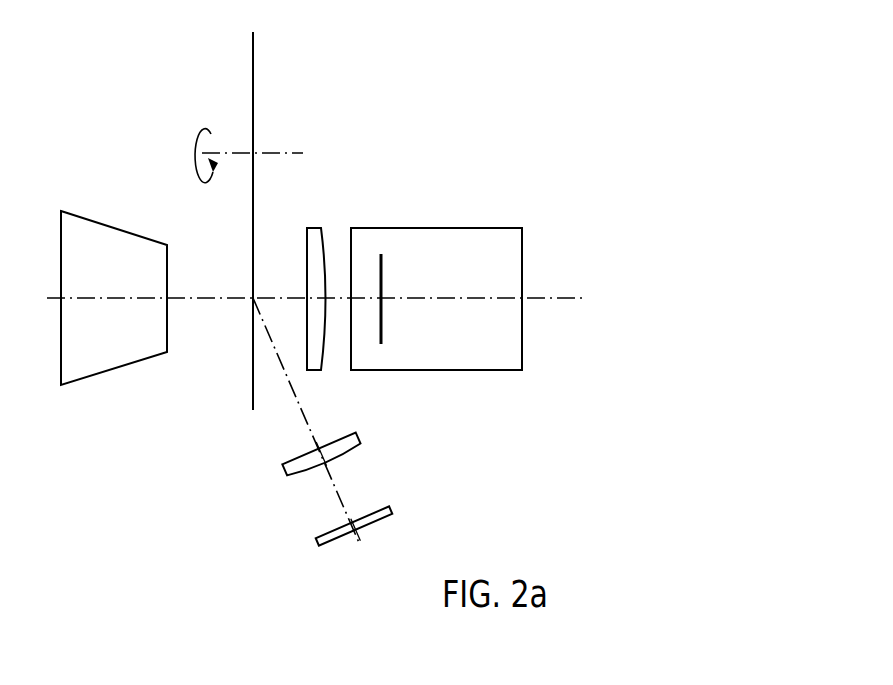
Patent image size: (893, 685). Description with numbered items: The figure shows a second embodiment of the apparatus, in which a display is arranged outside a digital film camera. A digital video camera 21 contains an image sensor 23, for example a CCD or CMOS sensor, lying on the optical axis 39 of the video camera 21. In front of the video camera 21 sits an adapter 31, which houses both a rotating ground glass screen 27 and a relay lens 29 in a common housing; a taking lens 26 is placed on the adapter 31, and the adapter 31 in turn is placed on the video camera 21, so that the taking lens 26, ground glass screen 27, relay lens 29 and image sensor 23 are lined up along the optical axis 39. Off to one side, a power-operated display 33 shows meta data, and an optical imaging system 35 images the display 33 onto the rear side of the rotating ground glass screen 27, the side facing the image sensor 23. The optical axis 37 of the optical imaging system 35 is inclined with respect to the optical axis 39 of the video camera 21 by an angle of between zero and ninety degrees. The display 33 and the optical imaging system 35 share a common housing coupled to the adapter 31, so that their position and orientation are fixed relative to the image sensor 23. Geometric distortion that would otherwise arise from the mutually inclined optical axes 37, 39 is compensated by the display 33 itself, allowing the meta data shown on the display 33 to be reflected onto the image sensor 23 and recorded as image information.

The digital video camera 21 is at (462, 228).
The image sensor 23 is at (382, 278).
The taking lens 26 is at (92, 235).
The rotating ground glass screen 27 is at (253, 95).
The relay lens 29 is at (313, 228).
The adapter 31 is at (297, 128).
The display 33 is at (395, 510).
The optical imaging system 35 is at (283, 468).
The optical axis of the optical imaging system 37 is at (337, 487).
The optical axis of the video camera 39 is at (548, 296).